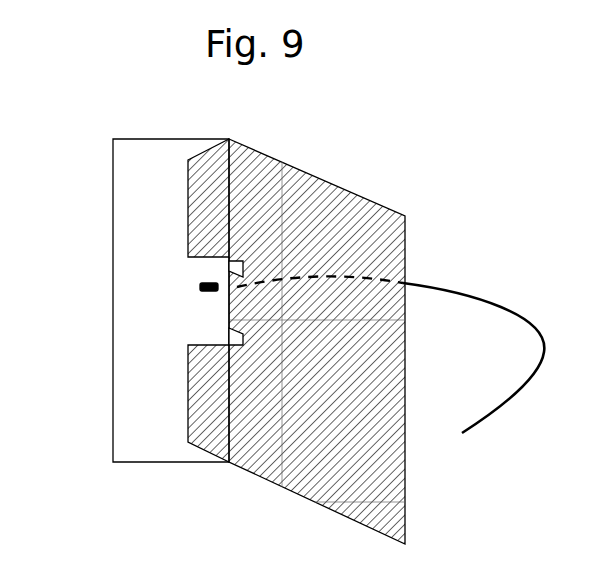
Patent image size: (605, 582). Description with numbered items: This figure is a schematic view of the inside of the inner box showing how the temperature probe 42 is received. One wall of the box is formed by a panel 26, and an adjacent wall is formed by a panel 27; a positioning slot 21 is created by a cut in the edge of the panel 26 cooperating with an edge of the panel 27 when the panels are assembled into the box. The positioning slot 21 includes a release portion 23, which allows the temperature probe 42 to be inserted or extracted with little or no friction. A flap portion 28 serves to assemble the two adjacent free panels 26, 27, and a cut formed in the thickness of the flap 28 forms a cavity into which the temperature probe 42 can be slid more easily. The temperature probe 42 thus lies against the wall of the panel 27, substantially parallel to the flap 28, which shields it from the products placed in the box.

The panel 26 is at (315, 202).
The flap portion 28 is at (207, 217).
The panel 27 is at (143, 390).
The positioning slot 21 is at (226, 307).
The release portion 23 is at (238, 263).
The temperature probe 42 is at (205, 287).